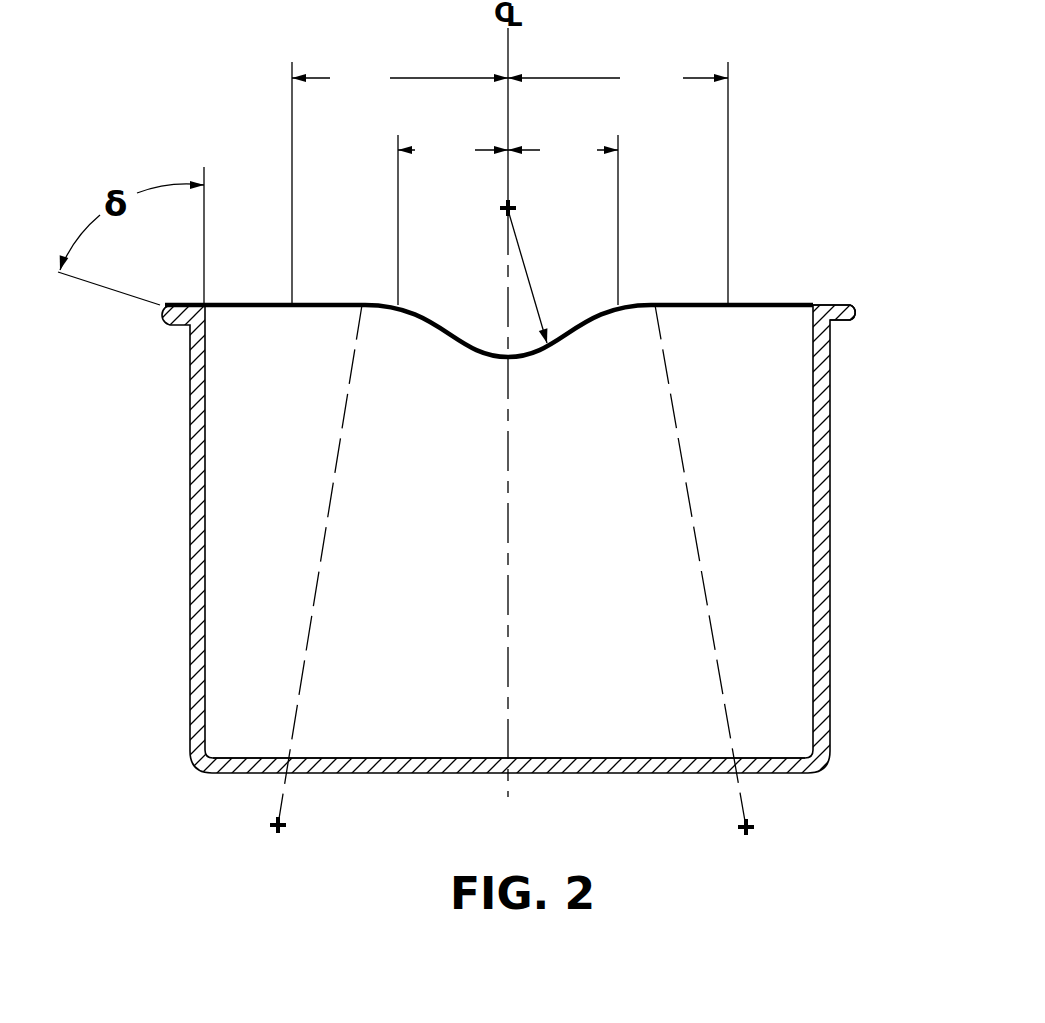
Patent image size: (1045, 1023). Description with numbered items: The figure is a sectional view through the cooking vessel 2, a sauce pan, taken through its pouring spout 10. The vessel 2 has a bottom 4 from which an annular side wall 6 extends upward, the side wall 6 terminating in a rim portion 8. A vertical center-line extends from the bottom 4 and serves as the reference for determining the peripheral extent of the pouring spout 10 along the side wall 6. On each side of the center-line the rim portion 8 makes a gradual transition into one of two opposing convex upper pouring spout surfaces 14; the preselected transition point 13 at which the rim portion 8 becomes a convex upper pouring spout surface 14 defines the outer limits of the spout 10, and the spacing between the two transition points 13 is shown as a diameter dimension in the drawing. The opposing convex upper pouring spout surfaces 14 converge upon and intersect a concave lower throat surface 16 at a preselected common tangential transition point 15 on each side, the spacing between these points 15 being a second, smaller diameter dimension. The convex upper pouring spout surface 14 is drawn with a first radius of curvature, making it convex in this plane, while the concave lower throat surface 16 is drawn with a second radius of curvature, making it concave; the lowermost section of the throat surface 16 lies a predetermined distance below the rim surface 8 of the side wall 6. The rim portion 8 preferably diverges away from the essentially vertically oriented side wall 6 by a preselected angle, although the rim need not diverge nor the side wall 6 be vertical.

The cooking vessel 2 is at (825, 252).
The bottom 4 is at (617, 775).
The annular side wall 6 is at (830, 672).
The rim portion 8 is at (860, 312).
The pouring spout 10 is at (532, 377).
The transition point 13 is at (737, 340).
The convex upper pouring spout surface 14 is at (657, 305).
The common tangential transition point 15 is at (610, 352).
The concave lower throat surface 16 is at (493, 352).